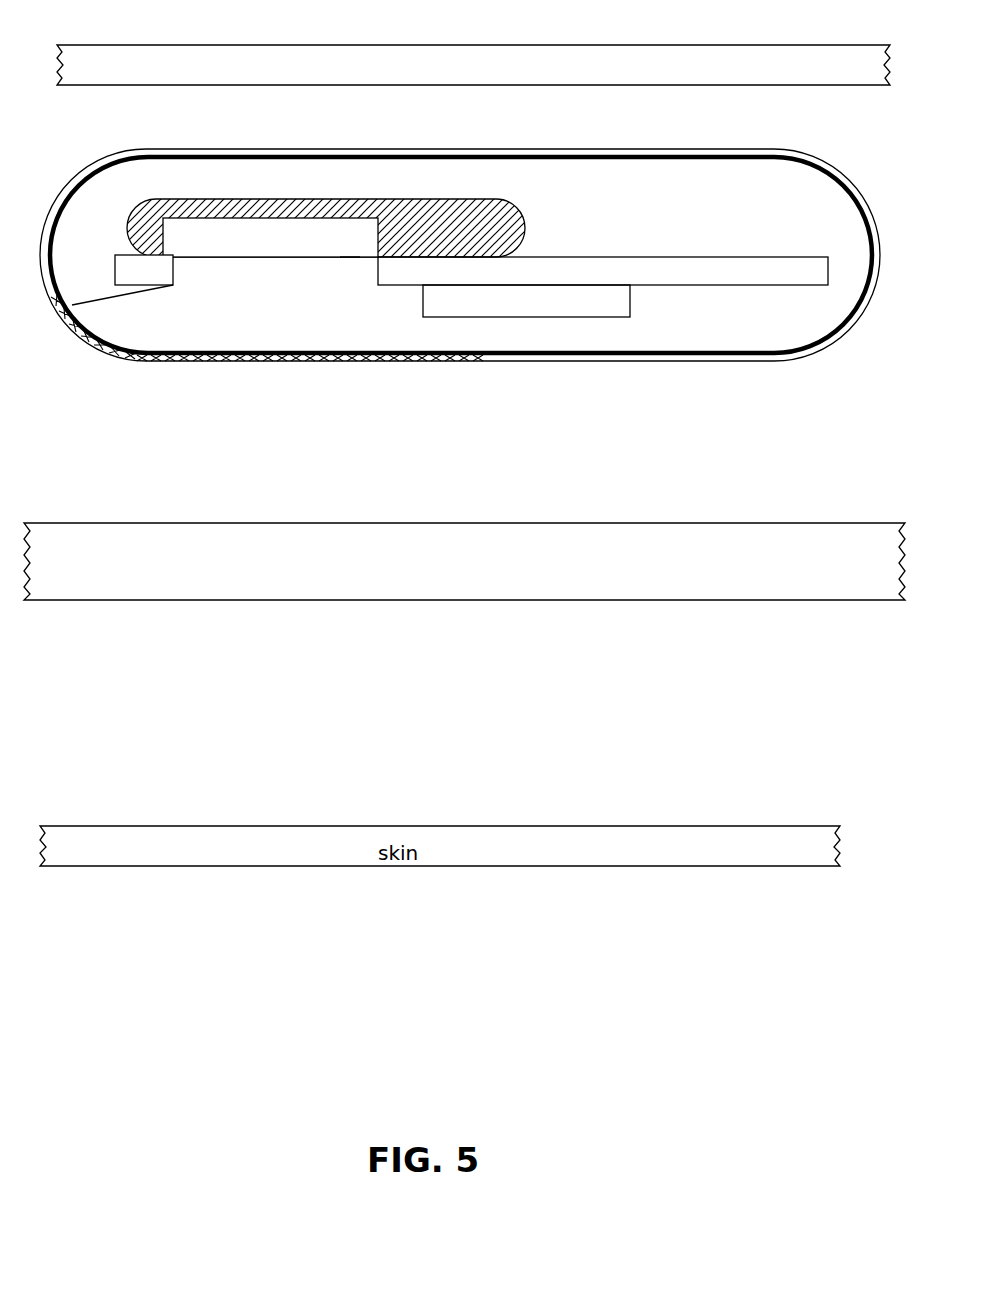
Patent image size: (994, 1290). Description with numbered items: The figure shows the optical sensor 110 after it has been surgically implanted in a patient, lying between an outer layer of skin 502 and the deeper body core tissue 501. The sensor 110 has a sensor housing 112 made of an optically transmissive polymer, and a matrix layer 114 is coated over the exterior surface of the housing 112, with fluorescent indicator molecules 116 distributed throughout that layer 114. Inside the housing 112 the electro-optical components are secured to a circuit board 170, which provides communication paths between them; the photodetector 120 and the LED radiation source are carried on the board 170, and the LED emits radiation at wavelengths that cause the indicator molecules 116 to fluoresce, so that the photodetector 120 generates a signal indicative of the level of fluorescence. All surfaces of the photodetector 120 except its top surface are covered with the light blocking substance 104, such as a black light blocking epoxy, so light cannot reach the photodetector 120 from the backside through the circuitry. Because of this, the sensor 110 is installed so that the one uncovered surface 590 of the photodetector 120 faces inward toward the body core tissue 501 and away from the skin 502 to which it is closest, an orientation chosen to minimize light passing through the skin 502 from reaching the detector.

The skin 502 is at (502, 64).
The body core tissue 501 is at (710, 538).
The optical sensor 110 is at (460, 316).
The matrix layer 114 is at (687, 362).
The sensor housing 112 is at (570, 355).
The fluorescent indicator molecules 116 is at (275, 365).
The light blocking substance 104 is at (500, 197).
The photodetector 120 is at (177, 222).
The surface 590 is at (348, 257).
The circuit board 170 is at (740, 285).